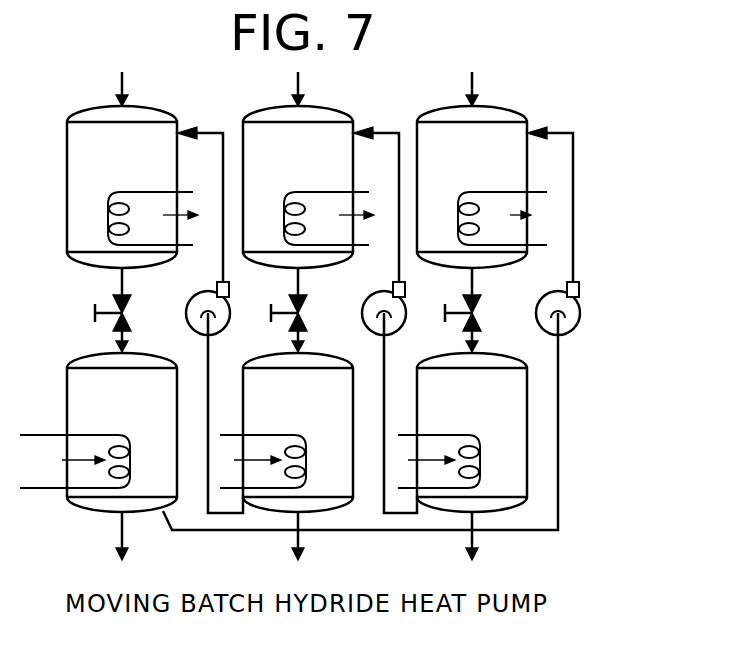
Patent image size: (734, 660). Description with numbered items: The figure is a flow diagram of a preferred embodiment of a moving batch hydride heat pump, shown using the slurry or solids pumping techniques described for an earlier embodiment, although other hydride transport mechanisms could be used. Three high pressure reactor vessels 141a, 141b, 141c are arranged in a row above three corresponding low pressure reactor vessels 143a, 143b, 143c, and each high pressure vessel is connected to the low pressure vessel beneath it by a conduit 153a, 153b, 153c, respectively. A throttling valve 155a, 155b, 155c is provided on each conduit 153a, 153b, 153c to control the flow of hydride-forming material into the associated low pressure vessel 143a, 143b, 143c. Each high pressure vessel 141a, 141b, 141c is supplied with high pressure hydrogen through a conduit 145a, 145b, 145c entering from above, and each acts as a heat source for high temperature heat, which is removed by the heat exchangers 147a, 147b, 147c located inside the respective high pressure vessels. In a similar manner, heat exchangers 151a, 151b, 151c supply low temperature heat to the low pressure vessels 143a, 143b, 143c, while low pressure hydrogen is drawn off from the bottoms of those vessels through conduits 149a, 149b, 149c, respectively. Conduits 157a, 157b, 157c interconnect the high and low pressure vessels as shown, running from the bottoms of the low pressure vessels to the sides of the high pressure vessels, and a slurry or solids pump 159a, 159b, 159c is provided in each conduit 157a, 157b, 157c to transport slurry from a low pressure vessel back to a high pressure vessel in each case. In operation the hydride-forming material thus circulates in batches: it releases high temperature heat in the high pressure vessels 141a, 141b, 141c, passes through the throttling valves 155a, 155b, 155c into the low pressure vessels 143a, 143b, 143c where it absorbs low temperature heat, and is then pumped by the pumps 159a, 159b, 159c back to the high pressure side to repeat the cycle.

The high pressure reactor vessel 141a is at (92, 113).
The high pressure reactor vessel 141b is at (281, 115).
The high pressure reactor vessel 141c is at (455, 110).
The low pressure reactor vessel 143a is at (88, 510).
The low pressure reactor vessel 143b is at (320, 508).
The low pressure reactor vessel 143c is at (493, 512).
The conduit 145a is at (125, 82).
The conduit 145b is at (302, 82).
The conduit 145c is at (477, 82).
The heat exchanger 147a is at (148, 196).
The heat exchanger 147b is at (324, 196).
The heat exchanger 147c is at (497, 196).
The conduit 149a is at (116, 537).
The conduit 149b is at (296, 540).
The conduit 149c is at (468, 542).
The heat exchanger 151a is at (44, 432).
The heat exchanger 151b is at (234, 432).
The heat exchanger 151c is at (408, 432).
The conduit 153a is at (118, 280).
The conduit 153b is at (294, 281).
The conduit 153c is at (470, 281).
The throttling valve 155a is at (112, 320).
The throttling valve 155b is at (290, 320).
The throttling valve 155c is at (462, 322).
The conduit 157a is at (558, 494).
The conduit 157b is at (200, 497).
The conduit 157c is at (382, 497).
The slurry or solids pump 159a is at (203, 297).
The slurry or solids pump 159b is at (375, 297).
The slurry or solids pump 159c is at (538, 312).